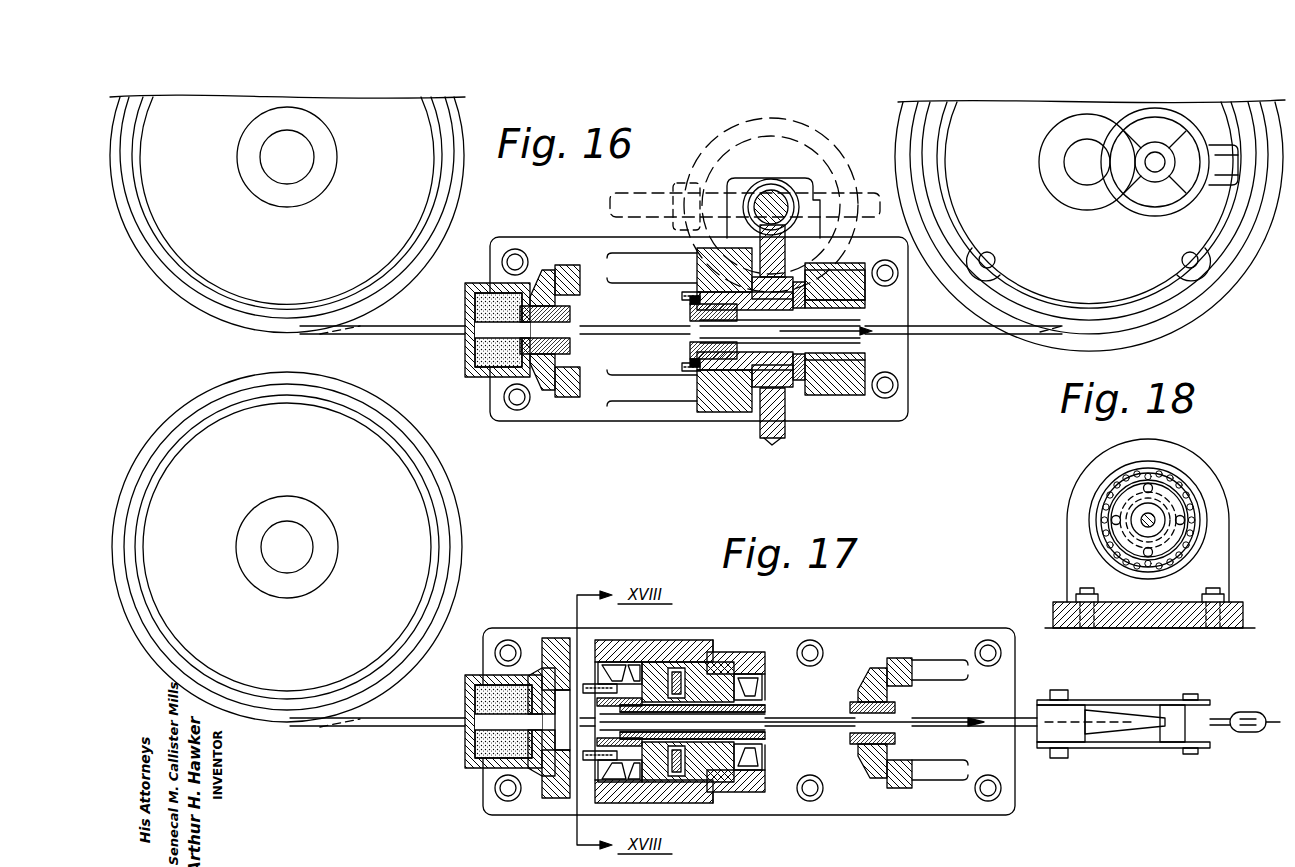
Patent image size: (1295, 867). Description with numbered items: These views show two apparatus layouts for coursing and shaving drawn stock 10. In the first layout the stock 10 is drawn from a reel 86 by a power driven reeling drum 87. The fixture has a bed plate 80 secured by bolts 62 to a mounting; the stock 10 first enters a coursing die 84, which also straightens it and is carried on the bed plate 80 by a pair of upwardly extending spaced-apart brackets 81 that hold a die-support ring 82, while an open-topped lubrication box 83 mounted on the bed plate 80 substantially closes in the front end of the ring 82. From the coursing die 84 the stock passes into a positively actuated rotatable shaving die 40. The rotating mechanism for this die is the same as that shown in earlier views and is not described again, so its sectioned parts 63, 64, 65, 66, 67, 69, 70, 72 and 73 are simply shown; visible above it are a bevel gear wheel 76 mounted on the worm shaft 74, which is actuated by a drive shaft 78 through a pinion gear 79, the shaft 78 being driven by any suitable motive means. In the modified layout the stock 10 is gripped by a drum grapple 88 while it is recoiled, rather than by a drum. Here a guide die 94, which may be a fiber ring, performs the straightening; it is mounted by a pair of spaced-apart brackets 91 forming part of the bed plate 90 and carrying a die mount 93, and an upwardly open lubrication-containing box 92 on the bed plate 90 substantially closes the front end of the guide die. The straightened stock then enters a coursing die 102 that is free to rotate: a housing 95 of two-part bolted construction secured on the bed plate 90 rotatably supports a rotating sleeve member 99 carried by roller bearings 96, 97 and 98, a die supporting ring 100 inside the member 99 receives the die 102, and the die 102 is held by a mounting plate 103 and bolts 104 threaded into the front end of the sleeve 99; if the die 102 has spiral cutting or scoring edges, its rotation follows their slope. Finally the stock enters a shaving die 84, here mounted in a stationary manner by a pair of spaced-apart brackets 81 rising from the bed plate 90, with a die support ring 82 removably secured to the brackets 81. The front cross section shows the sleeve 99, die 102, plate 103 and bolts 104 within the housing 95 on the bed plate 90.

In FIG. 16, the stock 10 is at (445, 326).
In FIG. 17, the stock 10 is at (446, 718).
In FIG. 18, the stock 10 is at (1146, 524).
In FIG. 16, the rotatable shaving die 40 is at (695, 320).
In FIG. 16, the bolts 62 is at (513, 258).
In FIG. 17, the bolts 62 is at (1001, 655).
In FIG. 18, the bolts 62 is at (1205, 594).
In FIG. 16, the housing block 63 is at (857, 392).
In FIG. 16, the bushing 64 is at (766, 388).
In FIG. 16, the housing bore 65 is at (832, 392).
In FIG. 16, the clamp block 66 is at (722, 412).
In FIG. 16, the retaining nut 67 is at (800, 382).
In FIG. 16, the sleeve 69 is at (690, 345).
In FIG. 16, the set screw 70 is at (688, 366).
In FIG. 16, the pivot pin 72 is at (771, 440).
In FIG. 16, the pin 73 is at (786, 200).
In FIG. 16, the worm shaft 74 is at (782, 178).
In FIG. 16, the bevel gear wheel 76 is at (820, 141).
In FIG. 16, the drive shaft 78 is at (608, 206).
In FIG. 16, the pinion gear 79 is at (672, 190).
In FIG. 16, the bed plate 80 is at (632, 422).
In FIG. 16, the brackets 81 is at (565, 272).
In FIG. 17, the brackets 81 is at (902, 668).
In FIG. 16, the die-support ring 82 is at (545, 392).
In FIG. 17, the die-support ring 82 is at (872, 670).
In FIG. 16, the lubrication box 83 is at (466, 368).
In FIG. 16, the coursing die 84 is at (572, 318).
In FIG. 17, the coursing die 84 is at (858, 704).
In FIG. 16, the reel 86 is at (272, 257).
In FIG. 17, the reel 86 is at (272, 652).
In FIG. 16, the reeling drum 87 is at (1068, 264).
In FIG. 17, the drum grapple 88 is at (1128, 748).
In FIG. 17, the bed plate 90 is at (900, 815).
In FIG. 18, the bed plate 90 is at (1248, 610).
In FIG. 17, the brackets 91 is at (556, 640).
In FIG. 17, the lubrication-containing box 92 is at (466, 762).
In FIG. 17, the die mount 93 is at (540, 768).
In FIG. 17, the guide die 94 is at (545, 690).
In FIG. 17, the housing 95 is at (762, 800).
In FIG. 18, the housing 95 is at (1206, 465).
In FIG. 17, the roller bearing 96 is at (764, 757).
In FIG. 17, the roller bearing 97 is at (722, 680).
In FIG. 17, the roller bearing 98 is at (636, 780).
In FIG. 18, the roller bearing 98 is at (1196, 498).
In FIG. 17, the rotating sleeve member 99 is at (766, 708).
In FIG. 17, the die supporting ring 100 is at (682, 782).
In FIG. 17, the coursing die 102 is at (678, 682).
In FIG. 18, the coursing die 102 is at (1142, 518).
In FIG. 17, the mounting plate 103 is at (590, 684).
In FIG. 17, the bolts 104 is at (592, 762).
In FIG. 18, the bolts 104 is at (1146, 486).